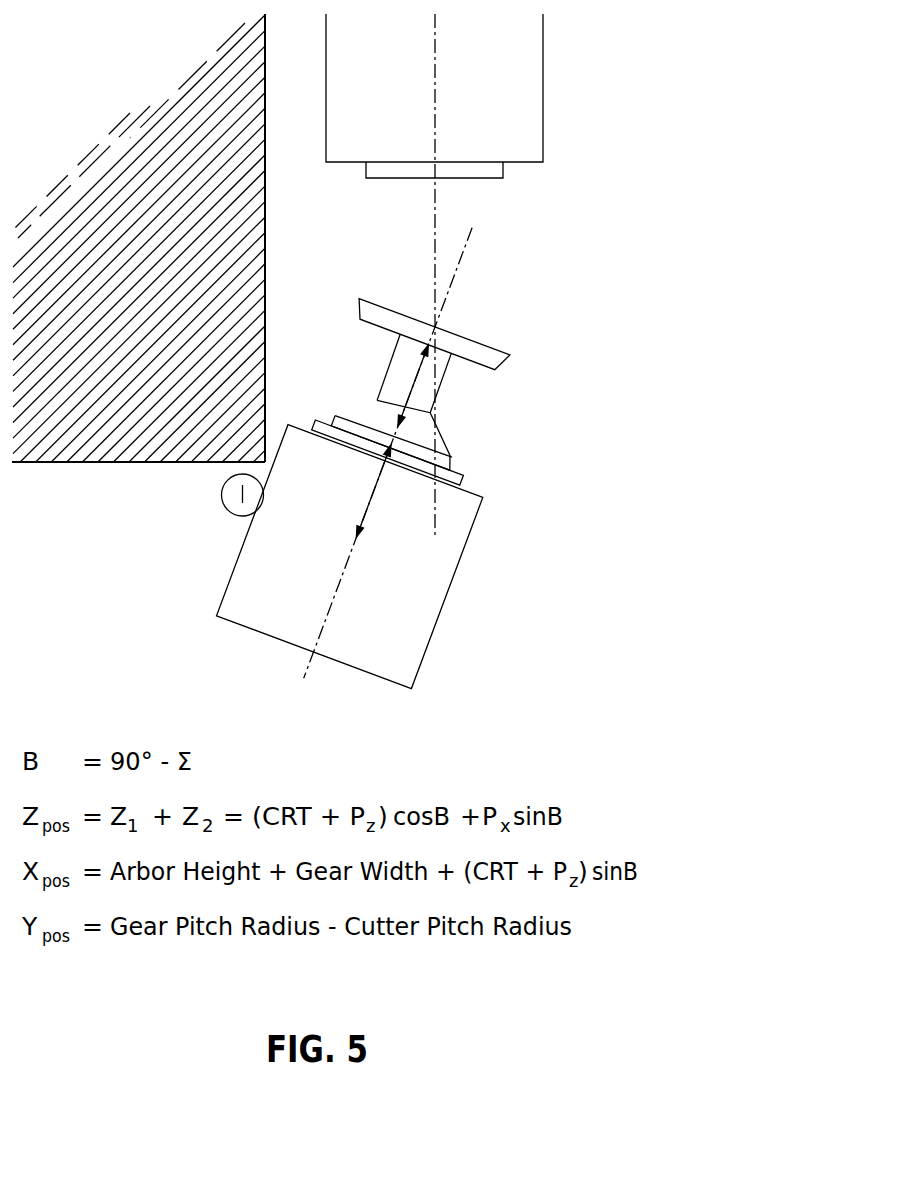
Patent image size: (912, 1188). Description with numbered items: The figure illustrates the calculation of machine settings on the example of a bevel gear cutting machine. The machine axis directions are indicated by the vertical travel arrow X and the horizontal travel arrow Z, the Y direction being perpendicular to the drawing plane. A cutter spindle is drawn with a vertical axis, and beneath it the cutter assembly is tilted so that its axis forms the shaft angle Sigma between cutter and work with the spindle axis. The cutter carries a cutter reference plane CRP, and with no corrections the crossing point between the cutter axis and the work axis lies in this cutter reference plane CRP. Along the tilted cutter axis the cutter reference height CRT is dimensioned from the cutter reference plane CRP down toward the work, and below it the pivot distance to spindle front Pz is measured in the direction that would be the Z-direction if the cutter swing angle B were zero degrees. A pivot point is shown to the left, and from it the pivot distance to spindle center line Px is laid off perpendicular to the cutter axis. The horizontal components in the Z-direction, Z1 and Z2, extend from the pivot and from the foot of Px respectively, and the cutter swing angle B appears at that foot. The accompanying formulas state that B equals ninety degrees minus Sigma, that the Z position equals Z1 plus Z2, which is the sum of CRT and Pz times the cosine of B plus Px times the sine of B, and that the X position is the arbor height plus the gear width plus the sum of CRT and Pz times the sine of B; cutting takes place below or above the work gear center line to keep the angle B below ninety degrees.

The X machine axis direction X is at (346, 30).
The shaft angle Sigma is at (471, 231).
The cutter reference plane CRP is at (463, 338).
The cutter reference height CRT is at (427, 373).
The pivot distance to spindle front in Z-direction Pz is at (381, 491).
The pivot distance to spindle center line in X-direction Px is at (356, 537).
The Z machine axis direction Z is at (185, 494).
The first Z-direction component Z1 is at (279, 480).
The second Z-direction component Z2 is at (435, 537).
The cutter swing angle B is at (356, 514).